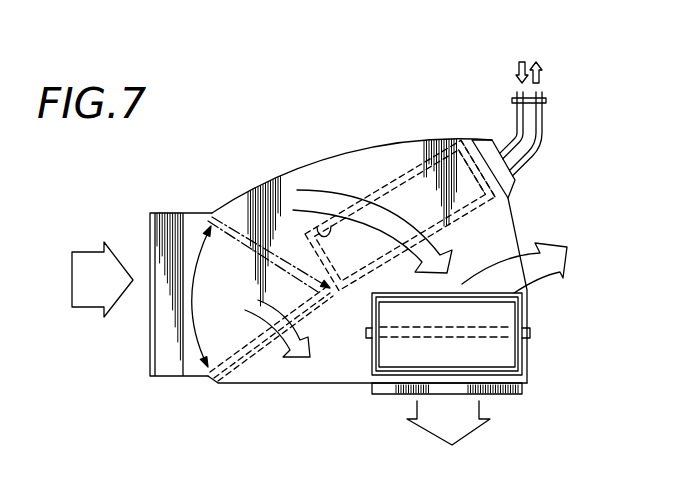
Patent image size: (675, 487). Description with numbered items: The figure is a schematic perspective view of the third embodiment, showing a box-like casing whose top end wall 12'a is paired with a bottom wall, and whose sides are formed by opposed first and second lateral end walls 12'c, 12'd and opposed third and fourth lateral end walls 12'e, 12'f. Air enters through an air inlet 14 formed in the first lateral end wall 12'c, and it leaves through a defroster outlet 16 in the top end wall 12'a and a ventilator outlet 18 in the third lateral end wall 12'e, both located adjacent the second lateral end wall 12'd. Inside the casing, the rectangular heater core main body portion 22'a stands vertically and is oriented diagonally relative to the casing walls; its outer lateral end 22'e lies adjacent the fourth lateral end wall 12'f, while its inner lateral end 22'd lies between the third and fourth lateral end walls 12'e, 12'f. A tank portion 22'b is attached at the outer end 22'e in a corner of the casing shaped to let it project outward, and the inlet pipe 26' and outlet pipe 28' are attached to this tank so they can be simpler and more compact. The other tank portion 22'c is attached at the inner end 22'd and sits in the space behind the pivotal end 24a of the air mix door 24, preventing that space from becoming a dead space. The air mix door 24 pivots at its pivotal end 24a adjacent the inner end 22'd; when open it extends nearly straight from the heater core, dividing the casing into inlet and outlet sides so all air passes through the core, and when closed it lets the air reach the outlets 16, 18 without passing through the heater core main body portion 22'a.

The top end wall 12'a is at (290, 402).
The first lateral end wall 12'c is at (149, 285).
The second lateral end wall 12'd is at (553, 290).
The third lateral end wall 12'e is at (426, 405).
The fourth lateral end wall 12'f is at (352, 204).
The air inlet 14 is at (152, 333).
The defroster outlet 16 is at (514, 353).
The ventilator outlet 18 is at (391, 395).
The heater core main body portion 22'a is at (400, 197).
The tank portion 22'b is at (469, 150).
The tank portion 22'c is at (264, 231).
The inner lateral end 22'd is at (294, 182).
The outer lateral end 22'e is at (526, 169).
The air mix door 24 is at (230, 378).
The pivotal end 24a is at (299, 329).
The inlet pipe 26' is at (495, 114).
The outlet pipe 28' is at (553, 119).